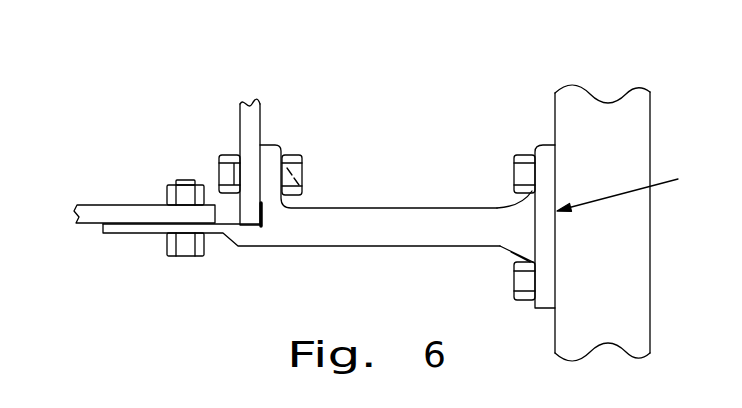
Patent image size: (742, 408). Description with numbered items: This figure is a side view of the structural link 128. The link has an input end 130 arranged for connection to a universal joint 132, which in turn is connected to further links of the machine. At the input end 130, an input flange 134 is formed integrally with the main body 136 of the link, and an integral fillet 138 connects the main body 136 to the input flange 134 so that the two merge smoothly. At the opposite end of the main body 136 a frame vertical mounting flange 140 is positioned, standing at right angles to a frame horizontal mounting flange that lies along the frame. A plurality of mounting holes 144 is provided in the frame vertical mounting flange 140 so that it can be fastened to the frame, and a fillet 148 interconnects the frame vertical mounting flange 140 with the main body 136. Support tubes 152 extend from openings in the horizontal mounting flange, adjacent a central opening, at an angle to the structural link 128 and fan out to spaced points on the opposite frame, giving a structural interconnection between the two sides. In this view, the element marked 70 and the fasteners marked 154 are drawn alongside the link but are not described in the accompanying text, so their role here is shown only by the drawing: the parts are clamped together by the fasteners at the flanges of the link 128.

The upright post 70 is at (254, 117).
The structural link 128 is at (410, 306).
The input end 130 is at (636, 187).
The universal joint 132 is at (597, 112).
The input flange 134 is at (543, 310).
The main body 136 is at (316, 248).
The integral fillet 138 is at (517, 250).
The frame vertical mounting flange 140 is at (263, 142).
The mounting holes 144 is at (298, 174).
The fillet 148 is at (313, 201).
The support tubes 152 is at (118, 212).
The fasteners 154 is at (225, 152).